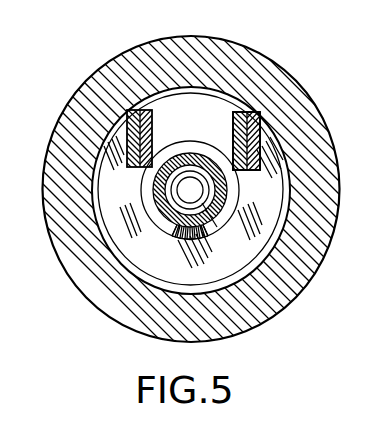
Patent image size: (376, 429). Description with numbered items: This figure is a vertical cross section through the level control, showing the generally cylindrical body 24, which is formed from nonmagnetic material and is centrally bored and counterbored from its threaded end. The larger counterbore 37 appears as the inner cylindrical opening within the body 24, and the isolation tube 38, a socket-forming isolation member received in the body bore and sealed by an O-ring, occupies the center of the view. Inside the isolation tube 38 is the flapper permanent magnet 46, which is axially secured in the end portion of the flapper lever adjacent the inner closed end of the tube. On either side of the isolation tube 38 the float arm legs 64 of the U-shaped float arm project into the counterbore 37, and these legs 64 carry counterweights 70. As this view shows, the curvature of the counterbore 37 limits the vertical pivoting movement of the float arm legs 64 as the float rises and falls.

The cylindrical body 24 is at (292, 100).
The counterbore 37 is at (291, 174).
The isolation tube 38 is at (177, 231).
The flapper permanent magnet 46 is at (209, 229).
The float arm legs 64 is at (188, 154).
The counterweights 70 is at (233, 125).